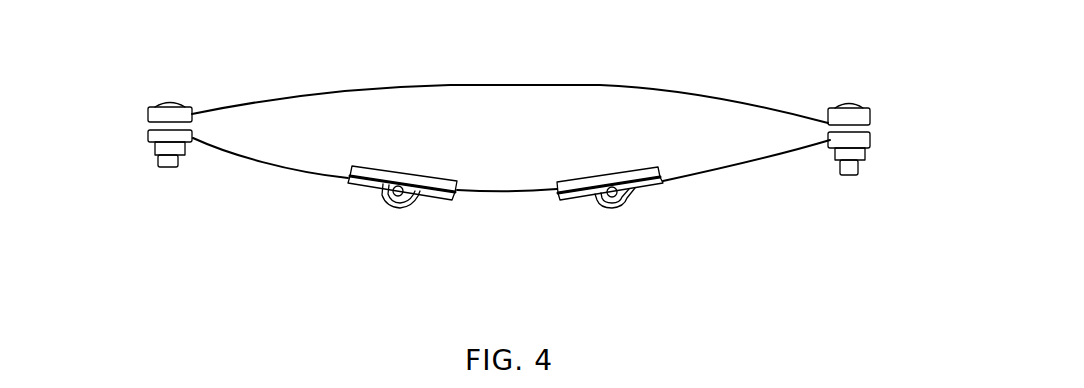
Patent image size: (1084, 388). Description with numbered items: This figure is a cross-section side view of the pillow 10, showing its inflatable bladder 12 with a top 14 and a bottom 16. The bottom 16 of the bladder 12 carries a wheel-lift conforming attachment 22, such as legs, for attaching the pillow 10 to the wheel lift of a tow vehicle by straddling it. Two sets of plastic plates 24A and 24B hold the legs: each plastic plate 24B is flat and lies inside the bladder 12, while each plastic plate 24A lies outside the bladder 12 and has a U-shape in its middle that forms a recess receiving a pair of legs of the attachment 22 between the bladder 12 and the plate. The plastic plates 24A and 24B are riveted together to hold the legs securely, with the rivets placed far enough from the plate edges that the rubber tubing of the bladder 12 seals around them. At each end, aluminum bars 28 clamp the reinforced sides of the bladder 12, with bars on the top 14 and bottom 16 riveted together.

The pillow 10 is at (505, 146).
The bladder 12 is at (511, 125).
The top 14 is at (453, 85).
The bottom 16 is at (305, 170).
The wheel-lift conforming attachment 22 is at (387, 203).
The plastic plate 24A is at (350, 185).
The plastic plate 24B is at (448, 193).
The aluminum bars 28 is at (157, 113).